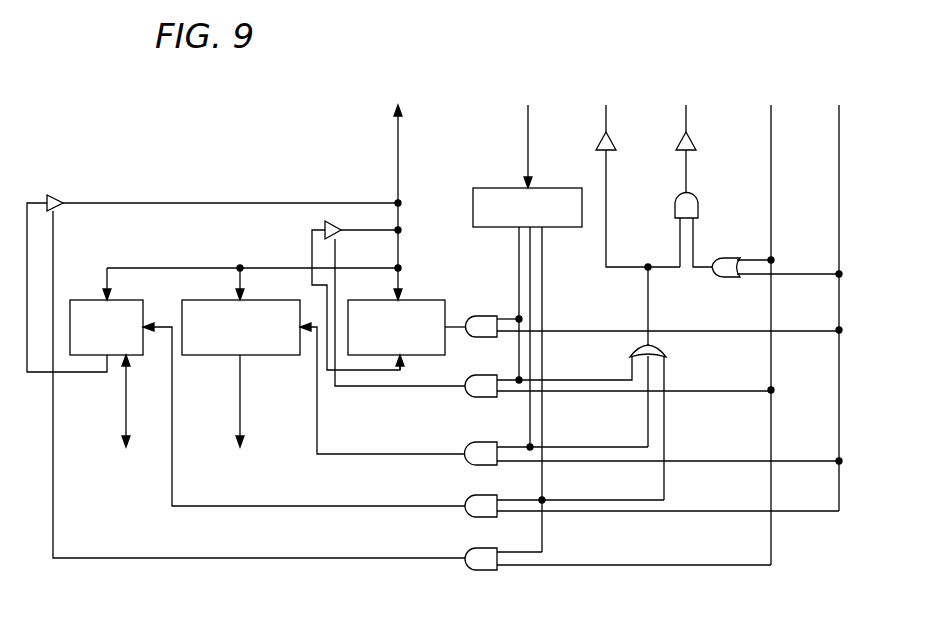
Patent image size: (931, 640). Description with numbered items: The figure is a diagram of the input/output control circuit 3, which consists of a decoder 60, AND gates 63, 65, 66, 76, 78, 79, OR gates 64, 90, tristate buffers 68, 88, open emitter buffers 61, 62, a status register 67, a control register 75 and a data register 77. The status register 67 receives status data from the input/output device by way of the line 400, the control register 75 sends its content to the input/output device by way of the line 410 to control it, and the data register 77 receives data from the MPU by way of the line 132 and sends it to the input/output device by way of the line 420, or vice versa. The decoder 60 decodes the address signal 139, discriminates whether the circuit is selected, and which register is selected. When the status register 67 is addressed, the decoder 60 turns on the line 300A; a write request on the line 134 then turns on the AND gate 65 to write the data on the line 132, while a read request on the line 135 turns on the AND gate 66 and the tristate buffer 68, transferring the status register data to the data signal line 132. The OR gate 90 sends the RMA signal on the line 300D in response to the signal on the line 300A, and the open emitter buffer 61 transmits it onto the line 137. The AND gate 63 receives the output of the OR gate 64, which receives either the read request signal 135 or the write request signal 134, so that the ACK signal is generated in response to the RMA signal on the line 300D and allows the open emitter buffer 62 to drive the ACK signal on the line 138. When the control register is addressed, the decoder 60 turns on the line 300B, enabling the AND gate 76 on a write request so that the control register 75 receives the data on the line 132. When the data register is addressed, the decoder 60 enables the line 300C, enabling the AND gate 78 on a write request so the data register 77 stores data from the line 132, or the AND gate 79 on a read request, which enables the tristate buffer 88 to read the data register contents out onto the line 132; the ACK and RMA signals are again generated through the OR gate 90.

The input/output control circuit 3 is at (214, 120).
The decoder 60 is at (545, 188).
The open emitter buffer 61 is at (616, 142).
The open emitter buffer 62 is at (696, 142).
The AND gate 63 is at (699, 206).
The OR gate 64 is at (724, 258).
The AND gate 65 is at (478, 316).
The AND gate 66 is at (475, 399).
The status register 67 is at (419, 284).
The tristate buffer 68 is at (340, 223).
The control register 75 is at (264, 284).
The AND gate 76 is at (475, 467).
The data register 77 is at (132, 284).
The AND gate 78 is at (475, 519).
The AND gate 79 is at (475, 572).
The tristate buffer 88 is at (62, 197).
The OR gate 90 is at (666, 352).
The data signal line 132 is at (400, 132).
The write request line 134 is at (848, 122).
The read request line 135 is at (781, 122).
The RMA signal line 137 is at (608, 132).
The ACK signal line 138 is at (688, 132).
The address signal line 139 is at (530, 132).
The decoder output line 300A is at (519, 272).
The decoder output line 300B is at (531, 252).
The decoder output line 300C is at (541, 285).
The RMA signal line 300D is at (646, 284).
The status data line 400 is at (402, 372).
The control output line 410 is at (242, 390).
The data transfer line 420 is at (126, 410).